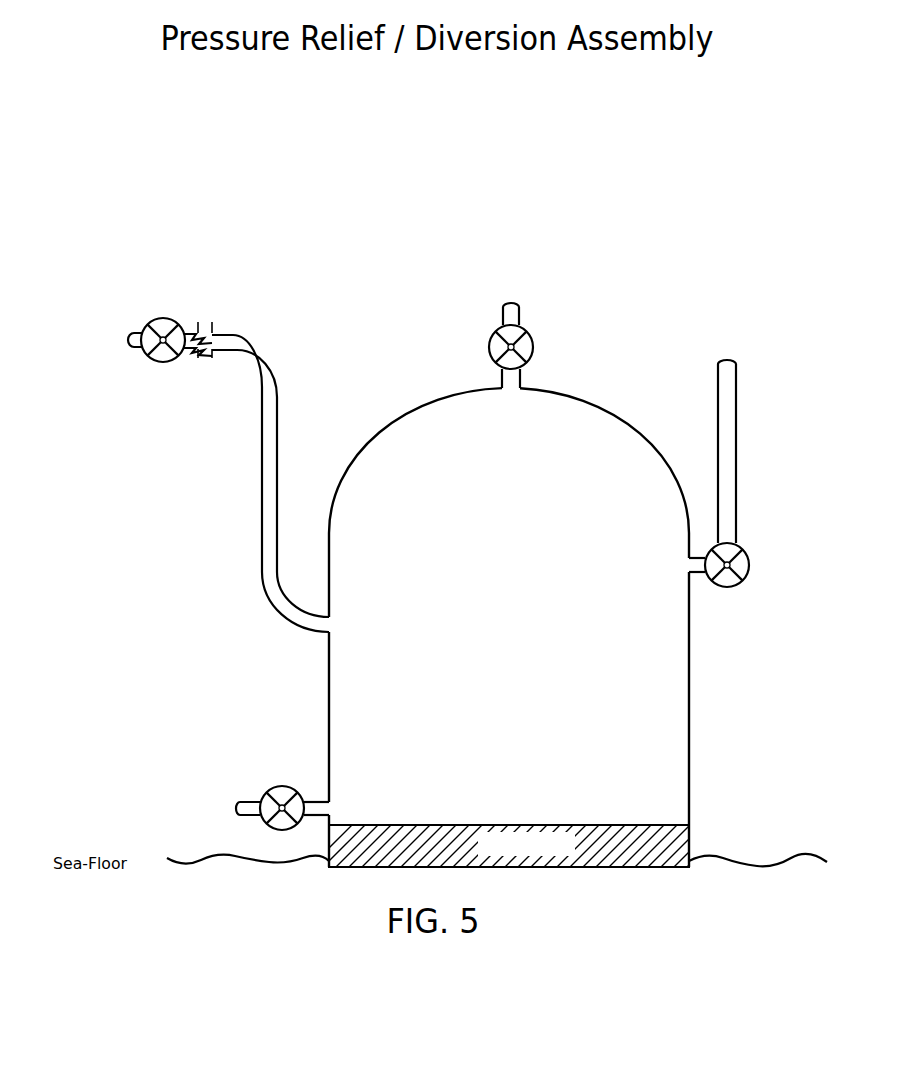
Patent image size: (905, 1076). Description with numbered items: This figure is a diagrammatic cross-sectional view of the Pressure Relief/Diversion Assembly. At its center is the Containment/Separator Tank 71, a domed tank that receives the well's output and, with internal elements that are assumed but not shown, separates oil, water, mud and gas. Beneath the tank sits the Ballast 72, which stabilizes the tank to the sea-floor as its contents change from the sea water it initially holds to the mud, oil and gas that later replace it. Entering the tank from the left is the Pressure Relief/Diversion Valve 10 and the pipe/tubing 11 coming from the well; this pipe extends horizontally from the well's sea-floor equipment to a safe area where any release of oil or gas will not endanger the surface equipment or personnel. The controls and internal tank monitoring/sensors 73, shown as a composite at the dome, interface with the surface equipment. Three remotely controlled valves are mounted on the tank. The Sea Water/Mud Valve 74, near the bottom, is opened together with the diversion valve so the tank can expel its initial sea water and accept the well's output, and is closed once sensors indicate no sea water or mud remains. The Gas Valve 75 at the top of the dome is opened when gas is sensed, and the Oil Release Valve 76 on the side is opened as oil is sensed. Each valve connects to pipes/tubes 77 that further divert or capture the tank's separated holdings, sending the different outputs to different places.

The Pressure Relief/Diversion Valve 10 is at (229, 416).
The pipe/tubing coming from the well 11 is at (190, 322).
The Containment/Separator Tank 71 is at (509, 700).
The Ballast 72 is at (562, 842).
The controls and internal tank monitoring/sensors 73 is at (382, 431).
The Sea Water/Mud Valve 74 is at (294, 799).
The Gas Valve 75 is at (527, 378).
The Oil Release Valve 76 is at (719, 578).
The pipes/tubes 77 is at (464, 547).